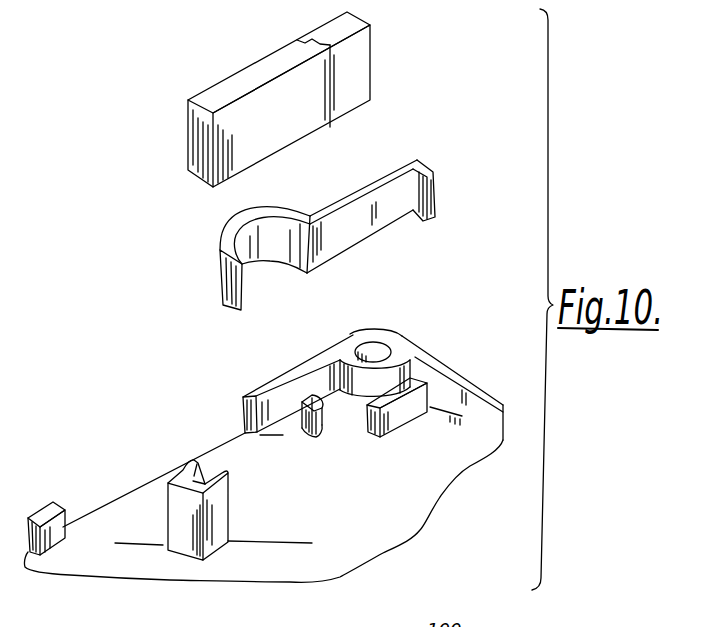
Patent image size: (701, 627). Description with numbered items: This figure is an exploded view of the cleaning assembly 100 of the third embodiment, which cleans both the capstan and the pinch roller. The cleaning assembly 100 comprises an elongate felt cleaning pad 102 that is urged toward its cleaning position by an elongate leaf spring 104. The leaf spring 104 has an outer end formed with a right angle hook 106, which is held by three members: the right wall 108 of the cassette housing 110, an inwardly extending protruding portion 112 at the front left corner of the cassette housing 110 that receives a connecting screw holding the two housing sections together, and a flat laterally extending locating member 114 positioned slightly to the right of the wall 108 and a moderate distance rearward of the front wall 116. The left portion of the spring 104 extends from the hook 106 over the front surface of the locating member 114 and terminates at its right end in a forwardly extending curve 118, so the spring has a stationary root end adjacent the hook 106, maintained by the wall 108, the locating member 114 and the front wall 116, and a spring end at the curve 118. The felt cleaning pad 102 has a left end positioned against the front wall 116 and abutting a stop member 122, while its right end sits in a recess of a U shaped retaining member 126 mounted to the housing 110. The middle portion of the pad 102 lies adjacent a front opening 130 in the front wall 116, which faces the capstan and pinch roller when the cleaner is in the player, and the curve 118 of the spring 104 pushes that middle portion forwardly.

The cleaning assembly 100 is at (458, 53).
The felt cleaning pad 102 is at (255, 72).
The leaf spring 104 is at (352, 235).
The right angle hook 106 is at (428, 163).
The right wall 108 is at (455, 368).
The cassette housing 110 is at (145, 568).
The protruding portion 112 is at (393, 370).
The locating member 114 is at (397, 412).
The front wall 116 is at (285, 382).
The curve 118 is at (268, 250).
The stop member 122 is at (322, 437).
The U shaped retaining member 126 is at (220, 500).
The front opening 130 is at (217, 453).